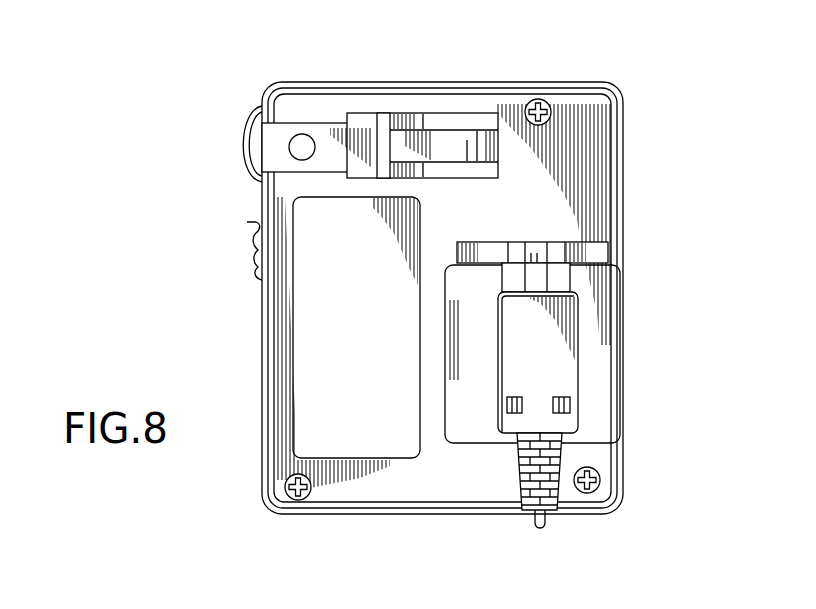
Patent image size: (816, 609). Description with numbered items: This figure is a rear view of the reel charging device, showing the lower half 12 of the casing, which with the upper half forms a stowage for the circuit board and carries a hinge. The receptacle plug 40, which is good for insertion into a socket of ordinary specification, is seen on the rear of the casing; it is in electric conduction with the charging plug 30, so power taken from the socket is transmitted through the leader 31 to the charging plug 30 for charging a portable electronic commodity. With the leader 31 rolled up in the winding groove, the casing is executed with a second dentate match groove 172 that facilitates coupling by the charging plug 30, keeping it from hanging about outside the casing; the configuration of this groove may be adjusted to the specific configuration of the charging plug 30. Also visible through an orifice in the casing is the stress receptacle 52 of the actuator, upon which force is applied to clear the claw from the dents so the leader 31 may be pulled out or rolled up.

The lower half 12 is at (610, 142).
The charging plug 30 is at (545, 383).
The leader 31 is at (547, 517).
The receptacle plug 40 is at (383, 118).
The stress receptacle 52 is at (250, 222).
The second dentate match groove 172 is at (600, 253).